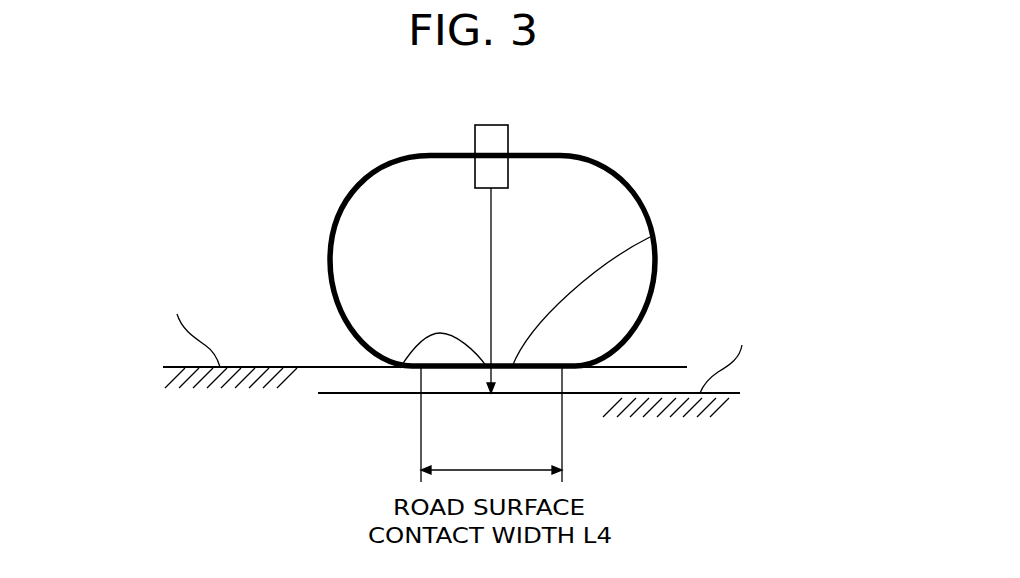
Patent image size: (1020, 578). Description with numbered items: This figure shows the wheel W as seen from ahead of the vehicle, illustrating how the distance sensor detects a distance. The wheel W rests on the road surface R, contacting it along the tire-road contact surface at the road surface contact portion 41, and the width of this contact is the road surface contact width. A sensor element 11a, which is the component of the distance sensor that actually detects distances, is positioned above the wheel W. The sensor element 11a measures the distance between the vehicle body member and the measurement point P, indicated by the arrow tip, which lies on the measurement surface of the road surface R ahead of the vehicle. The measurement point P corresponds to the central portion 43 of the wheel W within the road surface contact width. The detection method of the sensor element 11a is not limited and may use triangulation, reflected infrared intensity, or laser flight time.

The sensor element 11a is at (497, 125).
The road surface contact portion 41 is at (650, 237).
The central portion 43 is at (400, 368).
The wheel W is at (342, 208).
The road surface R is at (663, 367).
The measurement point P is at (491, 397).